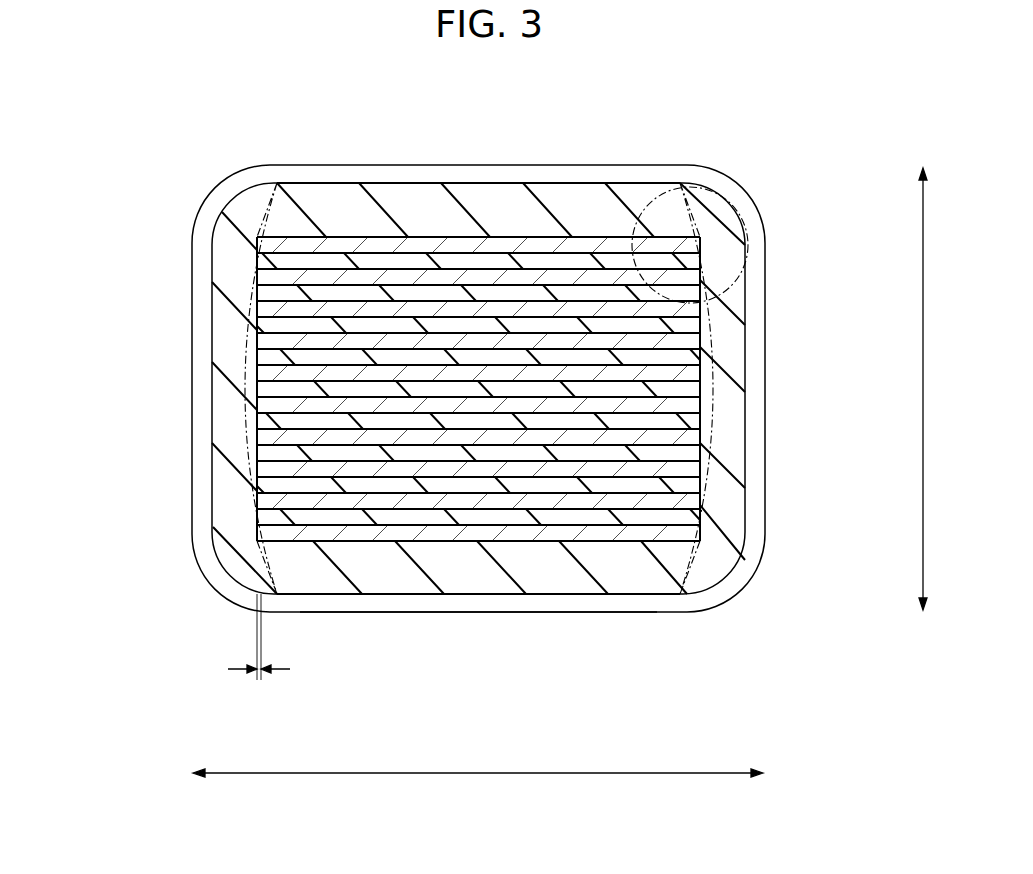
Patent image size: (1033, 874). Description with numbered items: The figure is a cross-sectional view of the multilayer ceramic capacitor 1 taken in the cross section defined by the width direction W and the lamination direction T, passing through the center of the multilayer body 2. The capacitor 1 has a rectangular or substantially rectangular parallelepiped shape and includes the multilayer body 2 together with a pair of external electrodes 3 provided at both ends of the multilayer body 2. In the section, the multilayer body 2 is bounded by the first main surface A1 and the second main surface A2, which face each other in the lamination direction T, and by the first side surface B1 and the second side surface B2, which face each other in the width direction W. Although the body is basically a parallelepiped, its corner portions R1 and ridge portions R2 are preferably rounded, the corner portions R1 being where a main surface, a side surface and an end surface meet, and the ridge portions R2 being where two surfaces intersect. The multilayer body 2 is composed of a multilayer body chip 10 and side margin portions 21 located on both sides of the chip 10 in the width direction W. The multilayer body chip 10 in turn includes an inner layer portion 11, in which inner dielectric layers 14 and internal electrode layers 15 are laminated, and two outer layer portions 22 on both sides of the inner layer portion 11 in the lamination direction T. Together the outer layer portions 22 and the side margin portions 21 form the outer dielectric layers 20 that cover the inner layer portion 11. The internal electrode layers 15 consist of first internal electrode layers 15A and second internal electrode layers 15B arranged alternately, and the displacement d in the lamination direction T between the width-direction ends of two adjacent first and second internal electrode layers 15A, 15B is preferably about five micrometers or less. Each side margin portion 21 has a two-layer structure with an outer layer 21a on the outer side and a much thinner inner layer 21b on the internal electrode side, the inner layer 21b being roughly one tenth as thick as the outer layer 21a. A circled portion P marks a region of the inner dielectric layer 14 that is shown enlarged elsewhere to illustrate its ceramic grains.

The multilayer ceramic capacitor 1 is at (788, 122).
The multilayer body 2 is at (605, 183).
The external electrode 3 is at (605, 613).
The multilayer body chip 10 is at (647, 183).
The inner layer portion 11 is at (364, 389).
The inner dielectric layer 14 is at (262, 298).
The internal electrode layer 15 is at (385, 389).
The first internal electrode layer 15A is at (262, 245).
The second internal electrode layer 15B is at (262, 278).
The outer dielectric layer 20 is at (563, 390).
The side margin portion 21 is at (563, 388).
The outer layer 21a is at (730, 530).
The inner layer 21b is at (715, 495).
The outer layer portion 22 is at (465, 195).
The first main surface A1 is at (547, 185).
The second main surface A2 is at (548, 594).
The first side surface B1 is at (212, 478).
The second side surface B2 is at (745, 460).
The corner portion R1 is at (325, 183).
The ridge portion R2 is at (222, 190).
The circled portion P is at (780, 228).
The lamination direction T is at (933, 389).
The width direction W is at (478, 786).
The displacement d is at (259, 653).